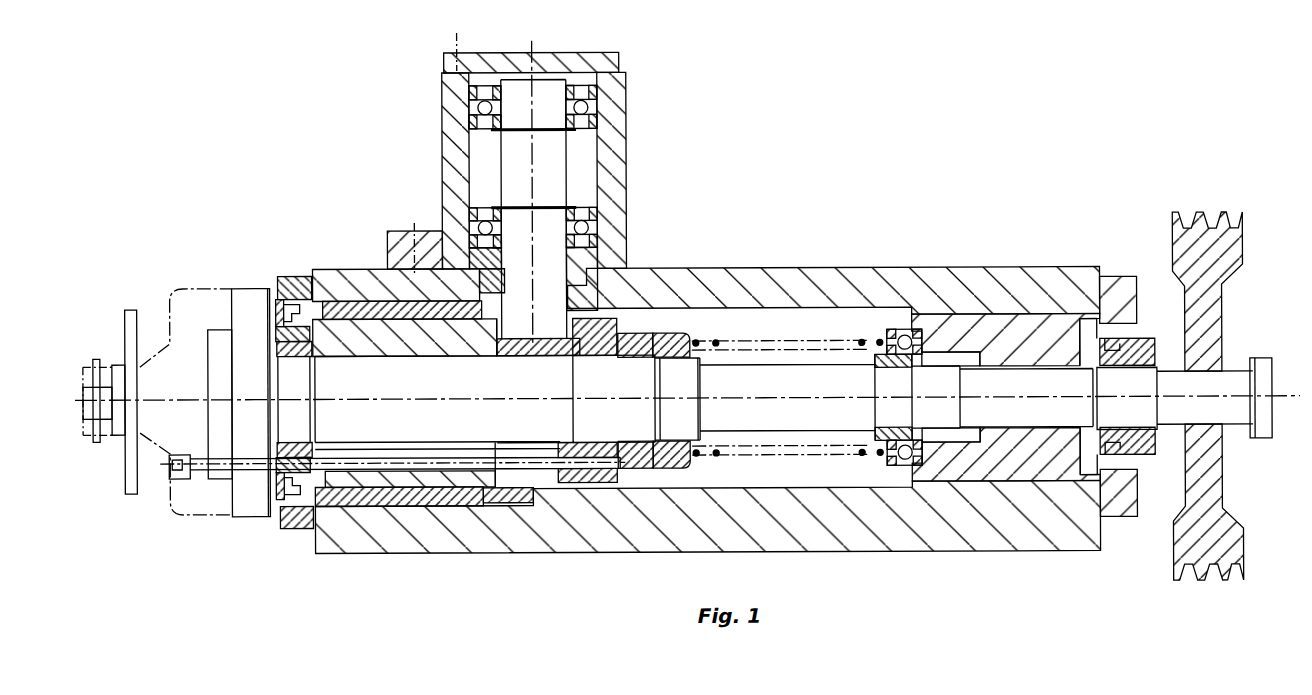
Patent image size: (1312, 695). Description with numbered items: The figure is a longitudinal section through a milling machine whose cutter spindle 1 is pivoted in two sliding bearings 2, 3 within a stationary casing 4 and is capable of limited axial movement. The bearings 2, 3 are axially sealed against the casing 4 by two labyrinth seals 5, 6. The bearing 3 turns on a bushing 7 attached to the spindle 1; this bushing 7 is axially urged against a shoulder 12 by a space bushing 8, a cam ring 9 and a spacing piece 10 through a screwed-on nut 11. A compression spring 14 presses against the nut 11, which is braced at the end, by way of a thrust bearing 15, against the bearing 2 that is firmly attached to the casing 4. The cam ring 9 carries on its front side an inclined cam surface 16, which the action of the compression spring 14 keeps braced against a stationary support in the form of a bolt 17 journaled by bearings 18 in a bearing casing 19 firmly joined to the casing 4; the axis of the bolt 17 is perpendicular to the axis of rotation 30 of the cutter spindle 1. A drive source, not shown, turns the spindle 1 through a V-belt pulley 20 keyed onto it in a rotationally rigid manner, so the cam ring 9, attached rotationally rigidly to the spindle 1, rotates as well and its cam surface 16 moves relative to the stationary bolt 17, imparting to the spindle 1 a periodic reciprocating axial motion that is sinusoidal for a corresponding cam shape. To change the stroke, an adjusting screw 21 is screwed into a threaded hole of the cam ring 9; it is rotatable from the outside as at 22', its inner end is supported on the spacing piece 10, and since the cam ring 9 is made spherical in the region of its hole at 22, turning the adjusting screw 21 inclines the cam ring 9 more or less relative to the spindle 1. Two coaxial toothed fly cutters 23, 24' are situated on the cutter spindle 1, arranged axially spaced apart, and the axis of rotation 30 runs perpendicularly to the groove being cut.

The cutter spindle 1 is at (287, 422).
The sliding bearing 2 is at (1000, 460).
The sliding bearing 3 is at (334, 310).
The stationary casing 4 is at (788, 280).
The labyrinth seal 5 is at (1135, 338).
The labyrinth seal 6 is at (276, 275).
The bushing 7 is at (423, 348).
The space bushing 8 is at (520, 348).
The cam ring 9 is at (598, 343).
The spacing piece 10 is at (641, 345).
The screwed-on nut 11 is at (688, 335).
The shoulder 12 is at (299, 343).
The compression spring 14 is at (774, 341).
The thrust bearing 15 is at (888, 470).
The inclined cam surface 16 is at (560, 480).
The bolt 17 is at (548, 157).
The bearings 18 is at (602, 95).
The bearing housing 19 is at (613, 246).
The V-belt pulley 20 is at (1193, 243).
The adjusting screw 21 is at (208, 468).
The spherical region of cam ring hole 22 is at (587, 435).
The outside rotatable end of adjusting screw 22' is at (165, 509).
The toothed fly cutter 23 is at (98, 437).
The toothed fly cutter 24' is at (117, 431).
The axis of rotation 30 is at (78, 388).